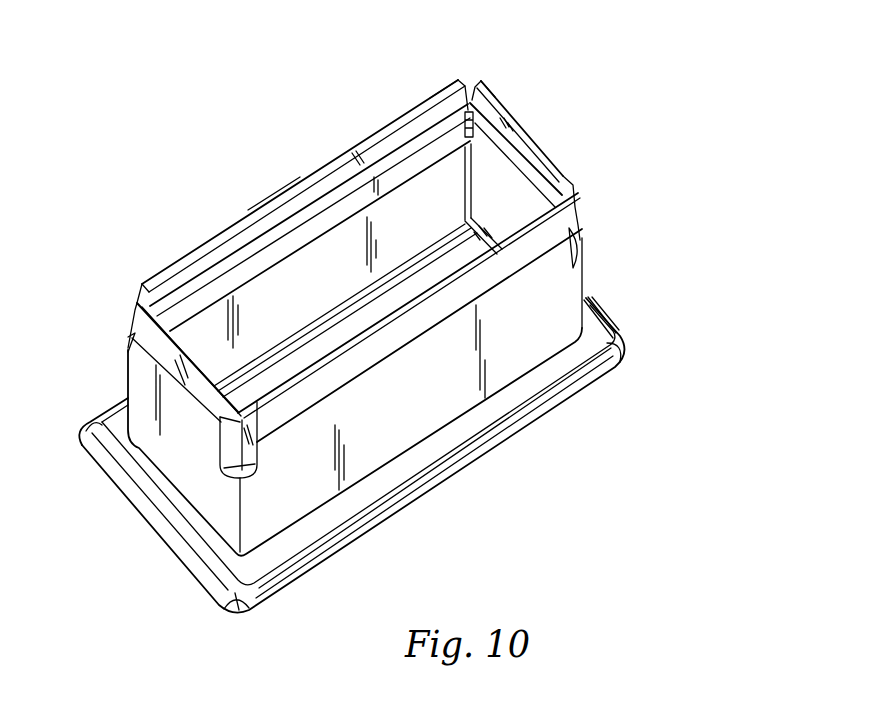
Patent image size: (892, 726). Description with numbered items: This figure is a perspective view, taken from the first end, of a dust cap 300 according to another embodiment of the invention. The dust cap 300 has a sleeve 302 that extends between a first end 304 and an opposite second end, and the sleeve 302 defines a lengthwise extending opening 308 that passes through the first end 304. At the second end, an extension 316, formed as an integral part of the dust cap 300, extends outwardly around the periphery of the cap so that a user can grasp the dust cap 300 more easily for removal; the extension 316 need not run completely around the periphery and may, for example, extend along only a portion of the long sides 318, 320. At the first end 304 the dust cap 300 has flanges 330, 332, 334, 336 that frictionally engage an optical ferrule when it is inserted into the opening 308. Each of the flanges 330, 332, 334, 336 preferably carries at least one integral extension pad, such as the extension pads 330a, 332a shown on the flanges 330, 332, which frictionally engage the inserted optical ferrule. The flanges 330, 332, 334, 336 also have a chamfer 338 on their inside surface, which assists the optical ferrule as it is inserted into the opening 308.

The dust cap 300 is at (710, 181).
The sleeve 302 is at (570, 300).
The first end 304 is at (598, 247).
The lengthwise extending opening 308 is at (495, 207).
The extension 316 is at (623, 357).
The long side 318 is at (420, 413).
The long side 320 is at (260, 205).
The flange 330 is at (565, 173).
The extension pad 330a is at (481, 86).
The flange 332 is at (215, 236).
The extension pad 332a is at (428, 130).
The flange 334 is at (143, 332).
The flange 336 is at (388, 360).
The chamfer 338 is at (303, 197).